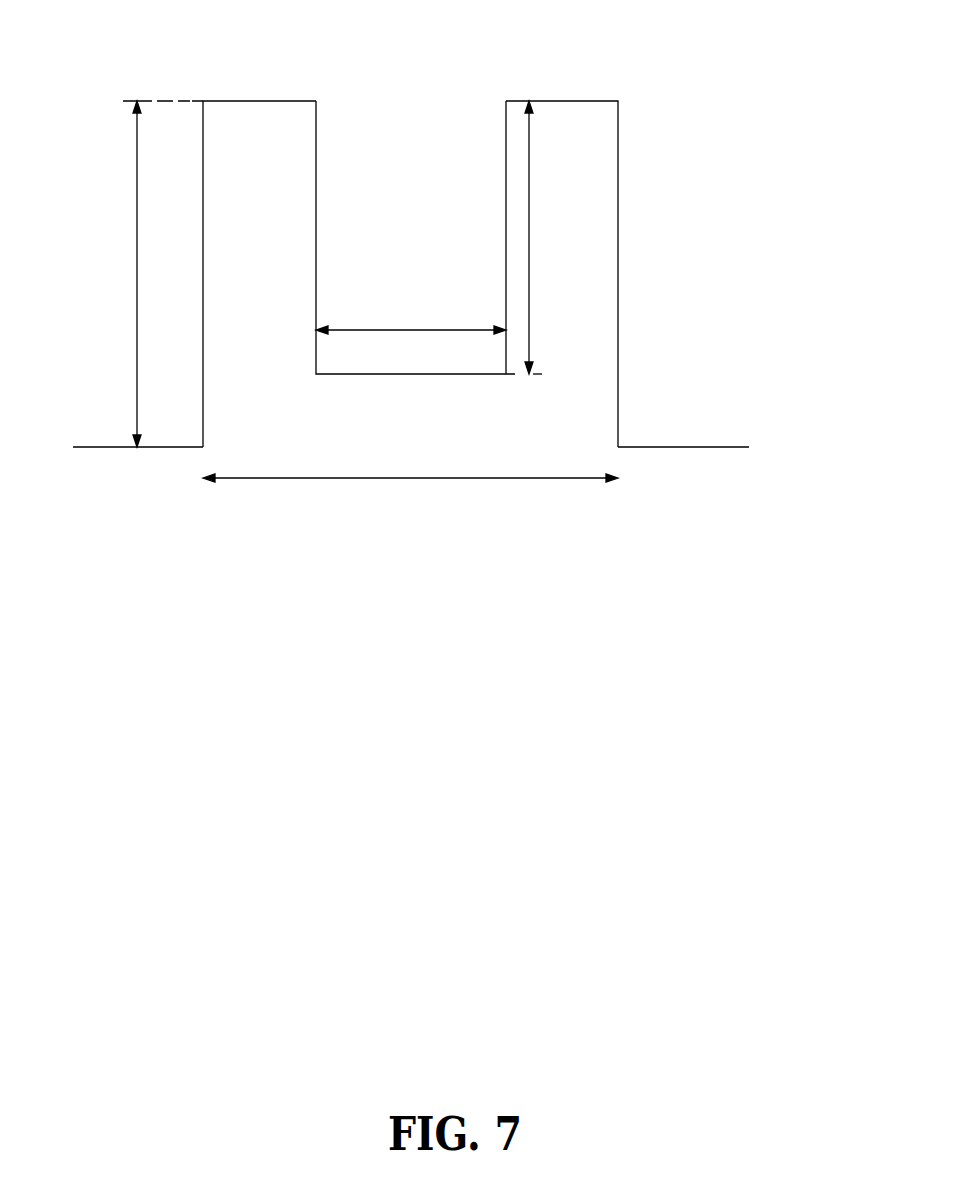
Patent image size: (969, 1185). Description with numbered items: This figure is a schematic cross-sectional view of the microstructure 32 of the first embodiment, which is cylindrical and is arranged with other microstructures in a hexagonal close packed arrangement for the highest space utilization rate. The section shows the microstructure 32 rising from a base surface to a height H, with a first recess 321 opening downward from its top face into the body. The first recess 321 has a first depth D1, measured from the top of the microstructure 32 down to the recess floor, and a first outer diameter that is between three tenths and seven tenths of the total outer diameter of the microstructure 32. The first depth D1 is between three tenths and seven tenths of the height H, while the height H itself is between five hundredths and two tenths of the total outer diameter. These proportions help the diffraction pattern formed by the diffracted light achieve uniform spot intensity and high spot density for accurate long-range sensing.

The microstructure 32 is at (562, 100).
The first recess 321 is at (316, 174).
The height H is at (148, 274).
The first depth D1 is at (556, 237).